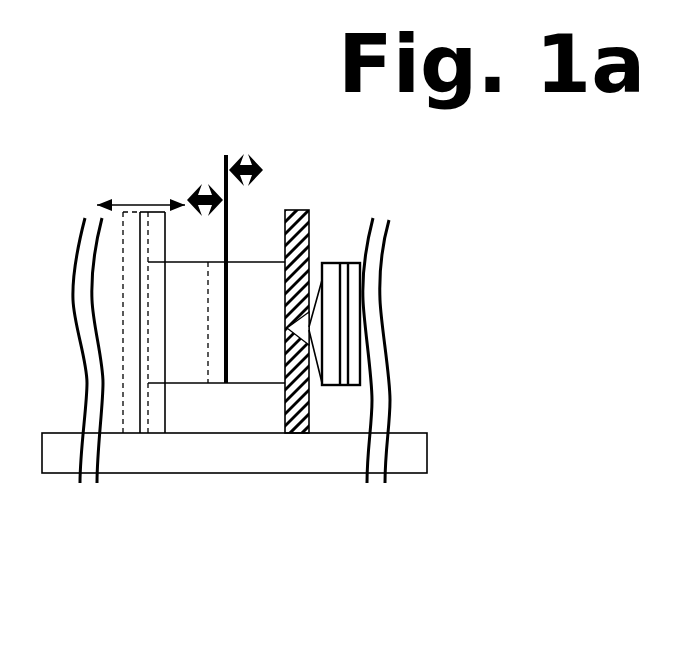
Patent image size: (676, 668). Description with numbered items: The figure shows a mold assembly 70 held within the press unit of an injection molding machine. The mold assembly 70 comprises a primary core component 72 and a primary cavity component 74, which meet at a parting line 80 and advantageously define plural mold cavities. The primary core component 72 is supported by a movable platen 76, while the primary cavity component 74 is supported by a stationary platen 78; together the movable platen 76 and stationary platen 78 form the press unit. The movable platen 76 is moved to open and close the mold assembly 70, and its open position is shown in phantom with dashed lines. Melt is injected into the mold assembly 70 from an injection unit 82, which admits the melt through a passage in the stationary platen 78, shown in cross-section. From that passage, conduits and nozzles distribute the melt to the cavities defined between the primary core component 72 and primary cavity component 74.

The mold assembly 70 is at (256, 200).
The primary core component 72 is at (220, 365).
The primary cavity component 74 is at (238, 365).
The movable platen 76 is at (161, 213).
The stationary platen 78 is at (302, 226).
The parting line 80 is at (226, 155).
The injection unit 82 is at (350, 362).